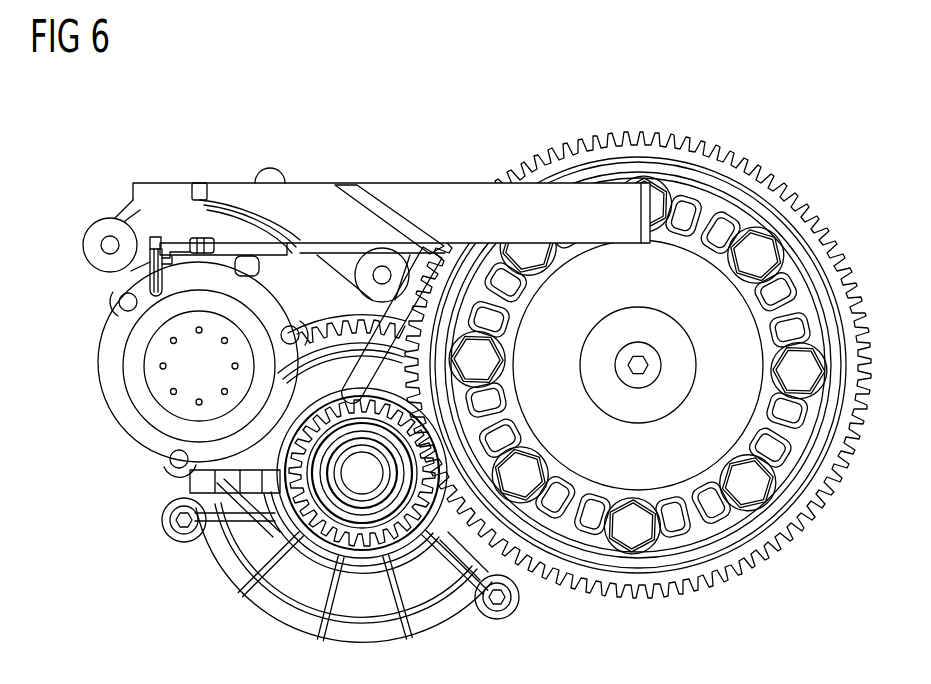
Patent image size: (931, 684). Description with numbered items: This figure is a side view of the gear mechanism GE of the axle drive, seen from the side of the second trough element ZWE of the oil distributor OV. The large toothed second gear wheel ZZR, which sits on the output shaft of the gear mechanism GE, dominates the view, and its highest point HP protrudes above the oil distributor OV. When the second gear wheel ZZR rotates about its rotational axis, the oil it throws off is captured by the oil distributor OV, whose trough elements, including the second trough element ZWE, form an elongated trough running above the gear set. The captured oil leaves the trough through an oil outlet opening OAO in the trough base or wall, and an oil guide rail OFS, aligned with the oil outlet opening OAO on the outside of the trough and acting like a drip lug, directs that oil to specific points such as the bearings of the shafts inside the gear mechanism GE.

The gear mechanism GE is at (758, 63).
The highest point HP is at (634, 114).
The second gear wheel ZZR is at (827, 473).
The second trough element ZWE is at (312, 207).
The oil distributor OV is at (447, 136).
The oil outlet opening OAO is at (155, 237).
The oil guide rail OFS is at (143, 283).